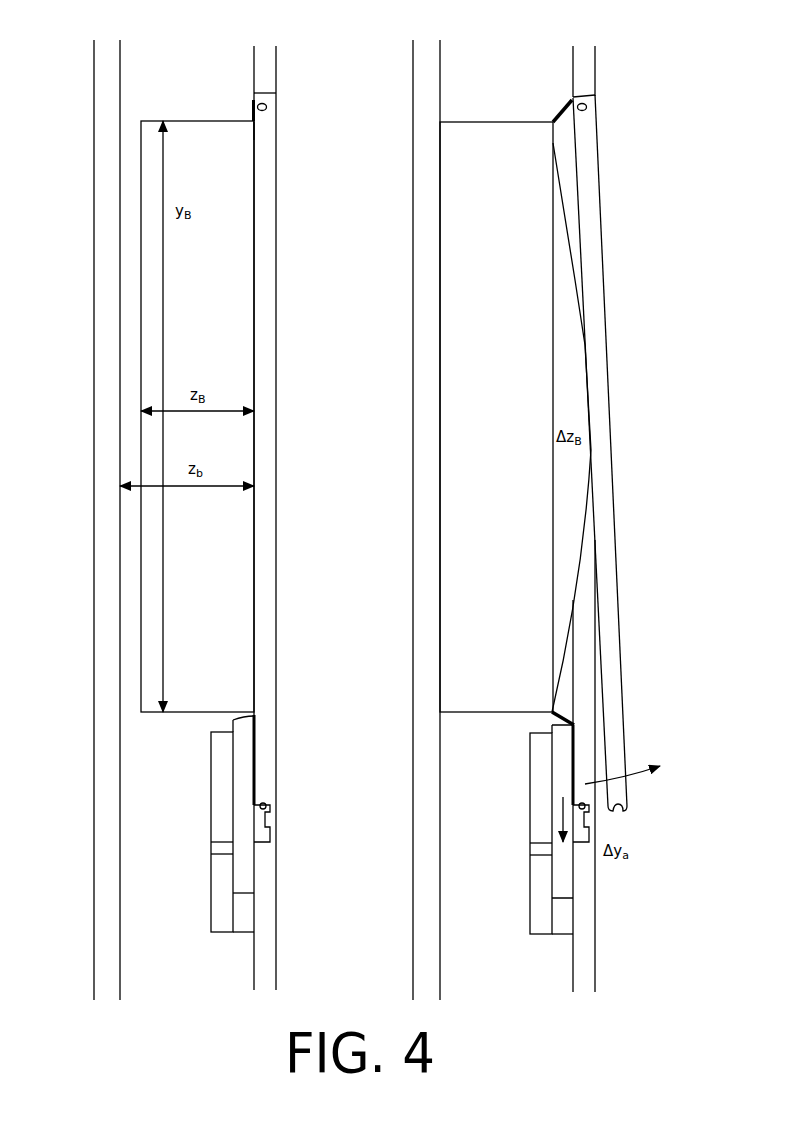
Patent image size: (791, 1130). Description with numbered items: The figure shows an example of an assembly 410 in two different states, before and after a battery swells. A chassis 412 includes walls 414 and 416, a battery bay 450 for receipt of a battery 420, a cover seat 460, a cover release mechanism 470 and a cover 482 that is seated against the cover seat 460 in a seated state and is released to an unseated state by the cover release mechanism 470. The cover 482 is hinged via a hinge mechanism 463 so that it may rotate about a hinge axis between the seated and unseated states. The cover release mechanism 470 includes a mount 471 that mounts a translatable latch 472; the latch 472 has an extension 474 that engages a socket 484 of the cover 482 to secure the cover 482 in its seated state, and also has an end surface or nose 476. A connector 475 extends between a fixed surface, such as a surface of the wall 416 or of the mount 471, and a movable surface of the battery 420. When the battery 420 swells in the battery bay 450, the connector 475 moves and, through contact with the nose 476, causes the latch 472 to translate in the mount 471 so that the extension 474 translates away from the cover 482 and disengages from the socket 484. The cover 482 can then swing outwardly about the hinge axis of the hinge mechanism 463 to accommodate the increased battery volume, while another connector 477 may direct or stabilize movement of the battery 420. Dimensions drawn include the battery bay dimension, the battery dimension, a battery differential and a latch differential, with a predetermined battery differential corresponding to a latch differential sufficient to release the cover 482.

The assembly 410 is at (415, 24).
The chassis 412 is at (141, 1019).
The wall 414 is at (120, 968).
The wall 416 is at (276, 970).
The battery 420 is at (218, 541).
The battery bay 450 is at (190, 70).
The cover seat 460 is at (277, 94).
The hinge mechanism 463 is at (266, 108).
The cover release mechanism 470 is at (196, 863).
The mount 471 is at (218, 776).
The latch 472 is at (245, 773).
The extension 474 is at (270, 806).
The connector 475 is at (553, 721).
The nose 476 is at (257, 720).
The connector 477 is at (560, 112).
The cover 482 is at (276, 479).
The socket 484 is at (625, 813).